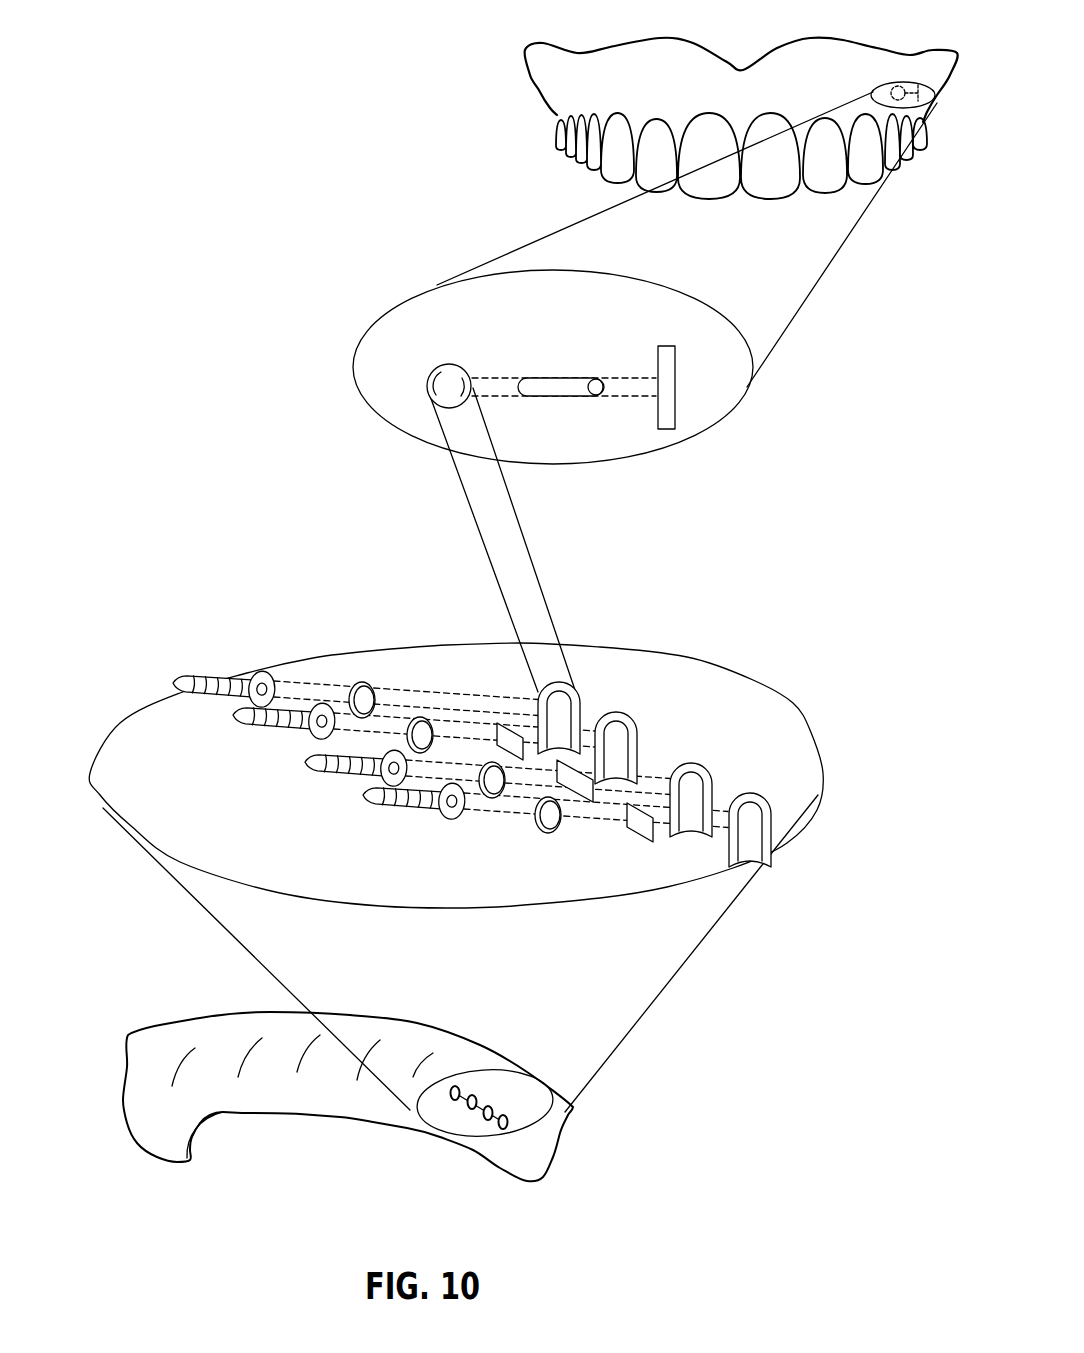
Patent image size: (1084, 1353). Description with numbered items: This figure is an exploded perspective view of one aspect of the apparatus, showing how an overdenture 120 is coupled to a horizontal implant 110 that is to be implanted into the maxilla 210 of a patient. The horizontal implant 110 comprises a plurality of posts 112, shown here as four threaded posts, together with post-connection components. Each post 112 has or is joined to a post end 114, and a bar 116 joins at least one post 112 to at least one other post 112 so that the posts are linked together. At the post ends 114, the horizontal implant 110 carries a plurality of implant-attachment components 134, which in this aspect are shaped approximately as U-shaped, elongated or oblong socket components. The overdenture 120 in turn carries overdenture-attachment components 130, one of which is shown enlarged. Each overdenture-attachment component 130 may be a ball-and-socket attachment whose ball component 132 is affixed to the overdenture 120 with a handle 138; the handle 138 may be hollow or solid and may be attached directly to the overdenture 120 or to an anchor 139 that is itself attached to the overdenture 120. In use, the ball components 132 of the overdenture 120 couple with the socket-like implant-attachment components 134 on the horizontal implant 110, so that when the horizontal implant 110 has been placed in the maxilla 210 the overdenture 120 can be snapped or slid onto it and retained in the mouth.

The horizontal implant 110 is at (757, 636).
The post 112 is at (365, 793).
The post end 114 is at (355, 683).
The bar 116 is at (497, 723).
The overdenture 120 is at (527, 52).
The overdenture-attachment component 130 is at (903, 83).
The ball component 132 is at (427, 380).
The implant-attachment component 134 is at (750, 793).
The handle 138 is at (558, 397).
The anchor 139 is at (677, 385).
The maxilla 210 is at (200, 1020).